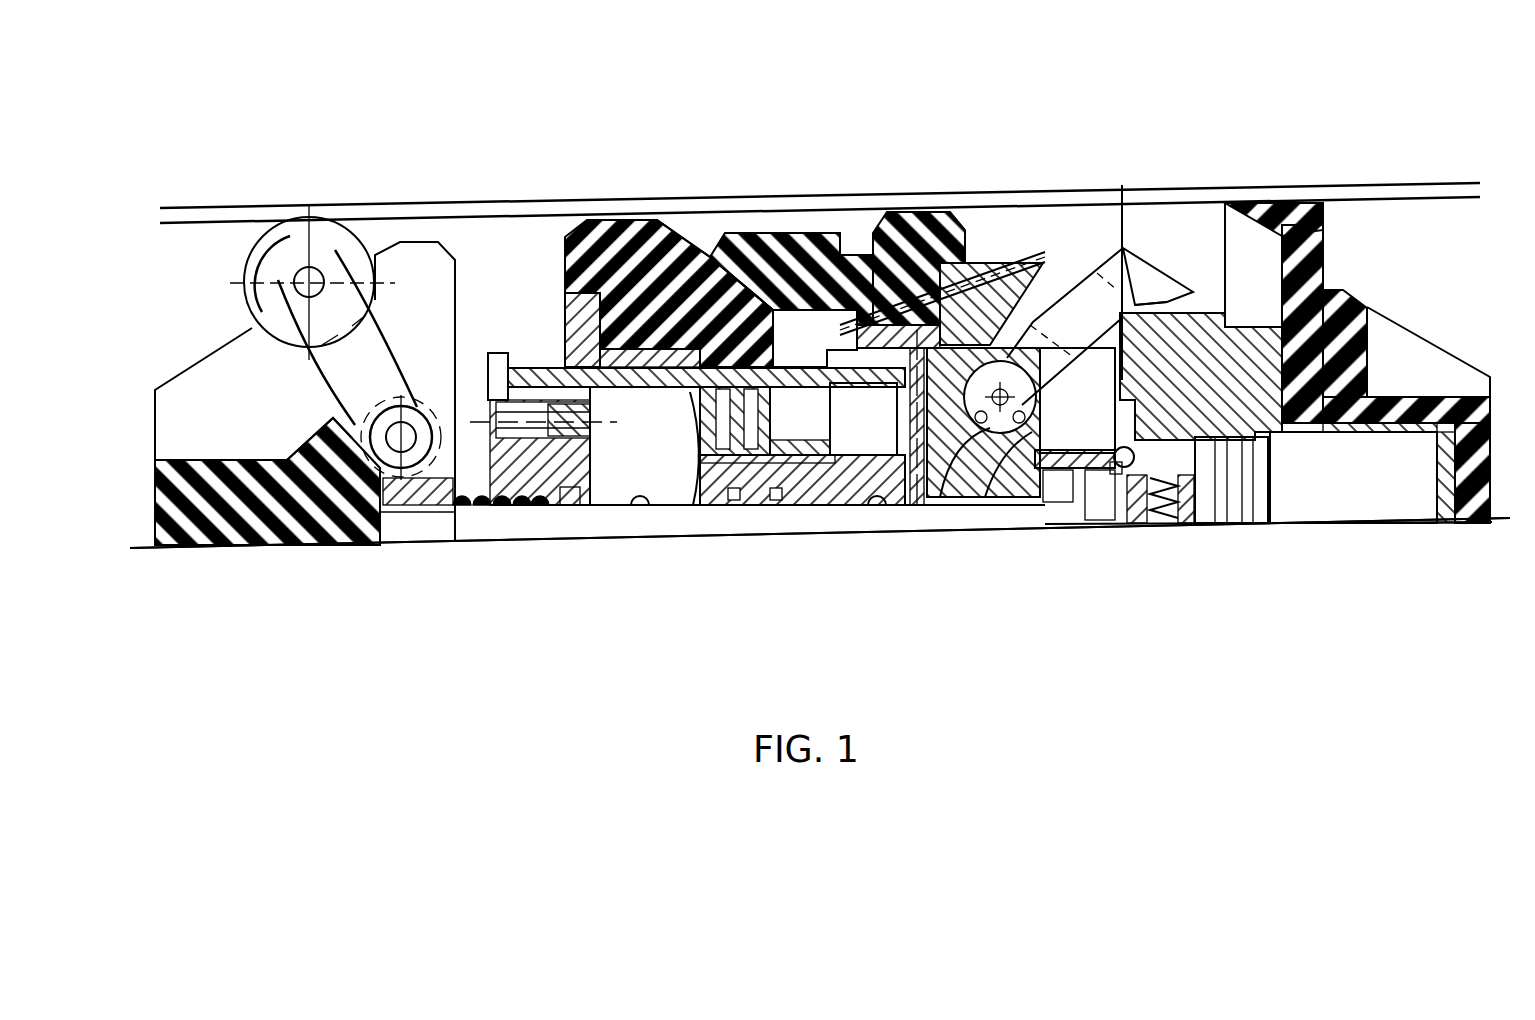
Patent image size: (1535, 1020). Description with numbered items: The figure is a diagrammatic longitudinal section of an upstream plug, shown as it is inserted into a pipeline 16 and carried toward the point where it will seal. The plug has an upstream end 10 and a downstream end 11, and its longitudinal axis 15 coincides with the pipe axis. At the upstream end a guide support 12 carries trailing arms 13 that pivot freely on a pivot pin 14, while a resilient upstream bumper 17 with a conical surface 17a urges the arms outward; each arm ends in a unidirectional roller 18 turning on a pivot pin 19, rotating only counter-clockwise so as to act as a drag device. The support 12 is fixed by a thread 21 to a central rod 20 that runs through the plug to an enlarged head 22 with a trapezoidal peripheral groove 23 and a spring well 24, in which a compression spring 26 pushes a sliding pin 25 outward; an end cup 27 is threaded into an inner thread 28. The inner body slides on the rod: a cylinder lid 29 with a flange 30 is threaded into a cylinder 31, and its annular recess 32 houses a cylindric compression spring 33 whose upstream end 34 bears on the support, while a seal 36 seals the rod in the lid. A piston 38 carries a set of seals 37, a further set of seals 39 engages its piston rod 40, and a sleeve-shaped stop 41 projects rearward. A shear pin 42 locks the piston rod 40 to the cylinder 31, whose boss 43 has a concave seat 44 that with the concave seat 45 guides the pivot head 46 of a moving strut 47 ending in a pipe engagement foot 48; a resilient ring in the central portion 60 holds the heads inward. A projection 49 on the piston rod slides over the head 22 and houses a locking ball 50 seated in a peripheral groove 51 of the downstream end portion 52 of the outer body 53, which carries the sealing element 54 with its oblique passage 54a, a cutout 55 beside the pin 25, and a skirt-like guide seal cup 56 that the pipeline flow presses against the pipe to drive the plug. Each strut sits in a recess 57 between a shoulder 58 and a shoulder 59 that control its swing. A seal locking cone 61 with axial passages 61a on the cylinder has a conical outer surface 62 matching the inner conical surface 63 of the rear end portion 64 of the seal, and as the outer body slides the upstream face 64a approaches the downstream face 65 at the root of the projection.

The upstream end 10 is at (220, 176).
The downstream end 11 is at (1452, 236).
The guide support 12 is at (412, 255).
The trailing arms 13 is at (387, 353).
The pivot pin 14 is at (401, 450).
The longitudinal axis 15 is at (303, 543).
The pipeline 16 is at (262, 218).
The resilient upstream bumper 17 is at (232, 464).
The conical surface 17a is at (353, 420).
The unidirectional roller 18 is at (338, 240).
The pivot pin 19 is at (309, 268).
The central rod 20 is at (551, 520).
The thread 21 is at (432, 492).
The enlarged head 22 is at (1060, 505).
The peripheral groove 23 is at (1118, 476).
The spring well 24 is at (1170, 522).
The sliding pin 25 is at (1266, 436).
The compression spring 26 is at (1185, 524).
The end cup 27 is at (1270, 513).
The inner thread 28 is at (1247, 524).
The cylinder lid 29 is at (541, 367).
The flange 30 is at (498, 352).
The cylinder 31 is at (664, 392).
The annular recess 32 is at (520, 506).
The cylindric compression spring 33 is at (533, 520).
The upstream end of the spring 34 is at (466, 512).
The seal 36 is at (568, 507).
The set of seals 37 is at (693, 506).
The piston 38 is at (770, 412).
The set of seals 39 is at (822, 466).
The piston rod 40 is at (862, 488).
The sleeve-shaped stop 41 is at (792, 492).
The shear pin 42 is at (914, 507).
The boss 43 is at (944, 507).
The concave seat 44 is at (966, 507).
The concave seat 45 is at (1021, 426).
The pivot head 46 is at (1036, 460).
The moving strut 47 is at (1068, 268).
The pipe engagement foot 48 is at (1150, 264).
The projection 49 is at (1095, 523).
The locking ball 50 is at (1112, 452).
The peripheral groove 51 is at (1227, 328).
The downstream end portion 52 is at (1255, 432).
The outer body 53 is at (1026, 262).
The sealing element 54 is at (916, 224).
The pressure compensating oblique passage 54a is at (990, 262).
The cutout 55 is at (1222, 524).
The guide seal cup 56 is at (1325, 252).
The recess 57 is at (1092, 293).
The shoulder 58 is at (1065, 326).
The shoulder 59 is at (1125, 246).
The central portion 60 is at (1001, 436).
The seal locking cone 61 is at (712, 256).
The axial passages 61a is at (641, 226).
The conical outer surface 62 is at (680, 245).
The inner conical surface 63 is at (750, 285).
The rear end portion 64 is at (796, 242).
The upstream face 64a is at (1052, 390).
The downstream face 65 is at (1068, 420).